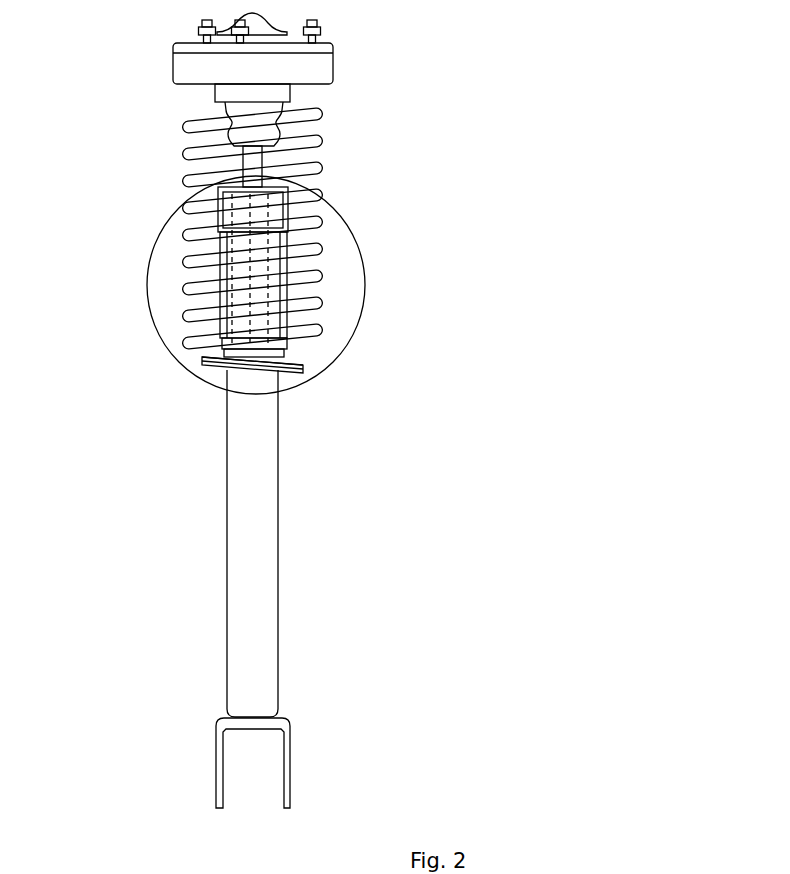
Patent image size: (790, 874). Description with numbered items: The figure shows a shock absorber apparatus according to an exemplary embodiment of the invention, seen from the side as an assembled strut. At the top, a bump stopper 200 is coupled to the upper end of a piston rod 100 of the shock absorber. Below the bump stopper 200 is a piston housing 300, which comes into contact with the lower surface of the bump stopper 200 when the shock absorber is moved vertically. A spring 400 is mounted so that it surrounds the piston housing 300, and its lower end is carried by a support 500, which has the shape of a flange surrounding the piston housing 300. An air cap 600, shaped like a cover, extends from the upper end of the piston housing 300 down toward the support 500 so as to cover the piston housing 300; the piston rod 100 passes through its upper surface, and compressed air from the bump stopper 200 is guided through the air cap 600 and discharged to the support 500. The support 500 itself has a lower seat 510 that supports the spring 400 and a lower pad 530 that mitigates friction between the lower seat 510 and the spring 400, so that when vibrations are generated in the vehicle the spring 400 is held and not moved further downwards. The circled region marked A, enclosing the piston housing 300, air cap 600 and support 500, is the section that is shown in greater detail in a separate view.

The piston rod 100 is at (240, 152).
The bump stopper 200 is at (230, 108).
The piston housing 300 is at (288, 286).
The spring 400 is at (324, 165).
The support 500 is at (326, 376).
The lower seat 510 is at (306, 372).
The lower pad 530 is at (305, 366).
The air cap 600 is at (288, 230).
The section A is at (354, 229).